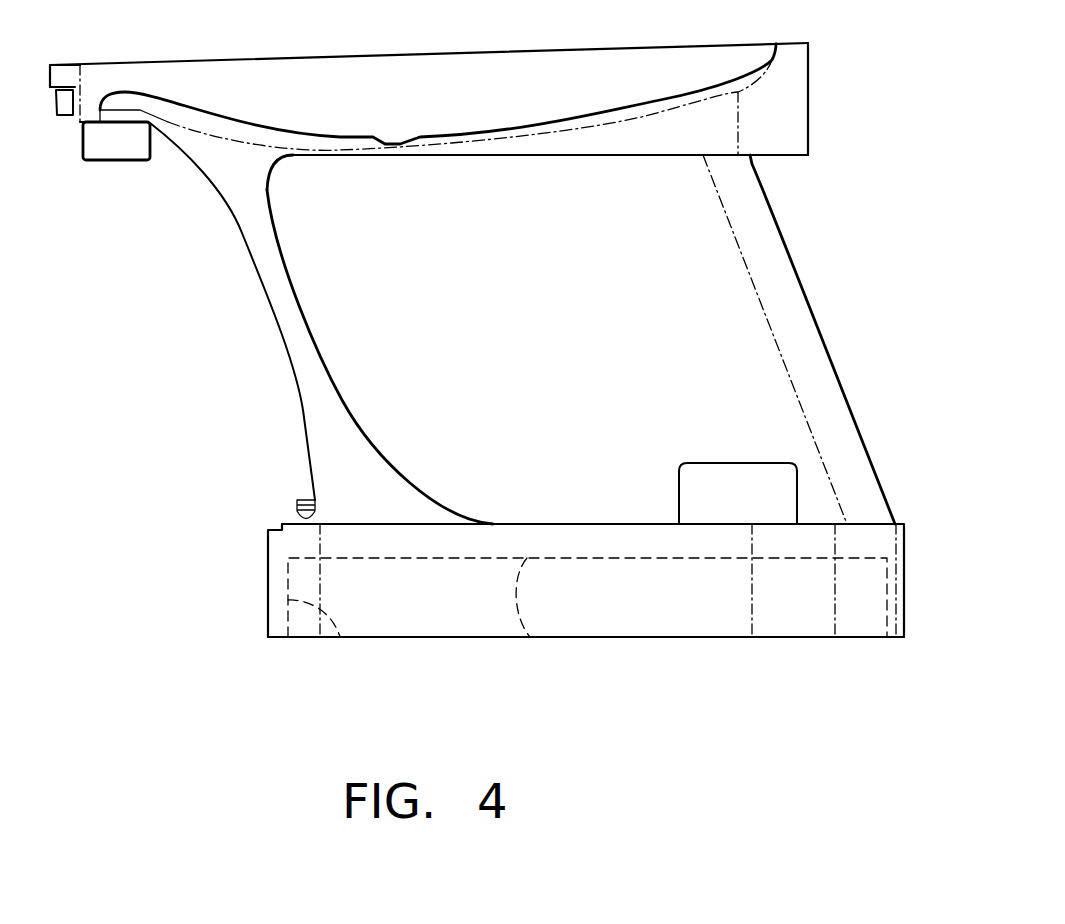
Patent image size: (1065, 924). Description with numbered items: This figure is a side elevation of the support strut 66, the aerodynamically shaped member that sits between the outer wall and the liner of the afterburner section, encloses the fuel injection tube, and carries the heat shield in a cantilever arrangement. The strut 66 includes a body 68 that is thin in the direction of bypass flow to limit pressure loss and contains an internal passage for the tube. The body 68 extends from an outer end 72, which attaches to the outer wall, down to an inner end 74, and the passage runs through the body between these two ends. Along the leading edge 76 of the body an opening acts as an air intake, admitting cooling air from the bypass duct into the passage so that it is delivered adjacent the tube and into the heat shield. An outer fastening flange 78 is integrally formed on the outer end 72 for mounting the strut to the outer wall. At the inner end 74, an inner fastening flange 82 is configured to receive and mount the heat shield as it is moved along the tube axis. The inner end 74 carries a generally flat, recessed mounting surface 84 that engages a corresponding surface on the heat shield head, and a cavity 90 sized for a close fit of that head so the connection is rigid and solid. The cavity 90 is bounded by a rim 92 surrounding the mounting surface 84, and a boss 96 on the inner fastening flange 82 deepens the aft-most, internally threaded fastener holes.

The support strut 66 is at (285, 340).
The body 68 is at (807, 303).
The outer end 72 is at (808, 43).
The inner end 74 is at (904, 620).
The leading edge 76 is at (242, 233).
The outer fastening flange 78 is at (808, 113).
The inner fastening flange 82 is at (268, 571).
The mounting surface 84 is at (530, 637).
The cavity 90 is at (340, 637).
The rim 92 is at (280, 637).
The boss 96 is at (710, 463).